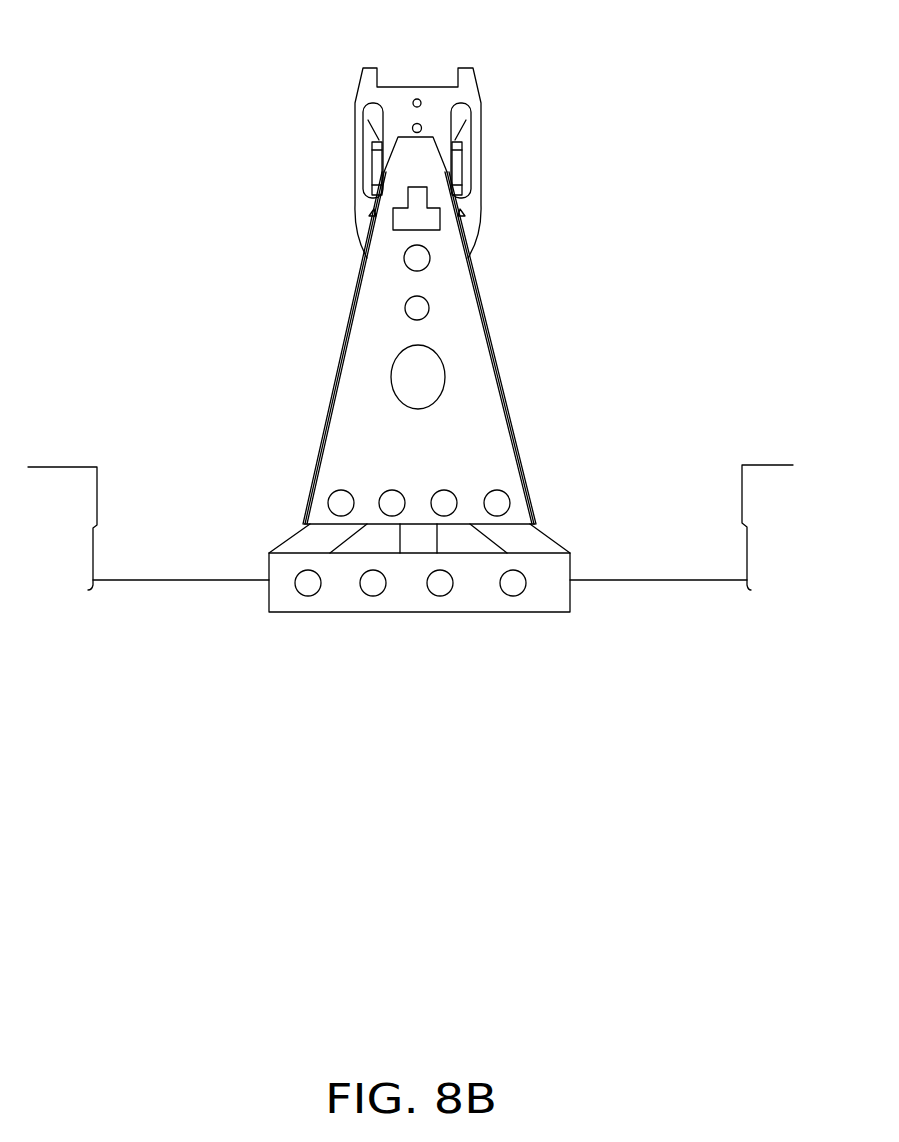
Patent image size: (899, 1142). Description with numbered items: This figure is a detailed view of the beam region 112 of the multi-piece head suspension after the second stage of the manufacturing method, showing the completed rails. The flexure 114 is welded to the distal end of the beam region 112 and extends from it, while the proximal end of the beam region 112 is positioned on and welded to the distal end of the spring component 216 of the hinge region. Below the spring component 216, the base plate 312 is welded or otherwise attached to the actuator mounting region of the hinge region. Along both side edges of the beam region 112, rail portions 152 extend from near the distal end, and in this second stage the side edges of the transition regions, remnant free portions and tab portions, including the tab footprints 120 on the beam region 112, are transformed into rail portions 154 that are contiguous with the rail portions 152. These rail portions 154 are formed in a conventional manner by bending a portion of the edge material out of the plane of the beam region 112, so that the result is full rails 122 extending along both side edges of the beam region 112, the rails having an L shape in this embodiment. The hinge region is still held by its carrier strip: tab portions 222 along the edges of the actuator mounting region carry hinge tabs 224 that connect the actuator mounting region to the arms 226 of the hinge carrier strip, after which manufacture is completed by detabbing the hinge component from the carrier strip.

The flexure 114 is at (427, 113).
The beam region 112 is at (443, 304).
The rail portions 152 is at (360, 282).
The rail portions 154 is at (326, 430).
The tab footprints 120 is at (310, 494).
The full rails 122 is at (499, 383).
The base plate 312 is at (442, 657).
The spring component 216 is at (318, 542).
The hinge tabs 224 is at (244, 601).
The arms 226 is at (160, 588).
The tab portions 222 is at (283, 597).